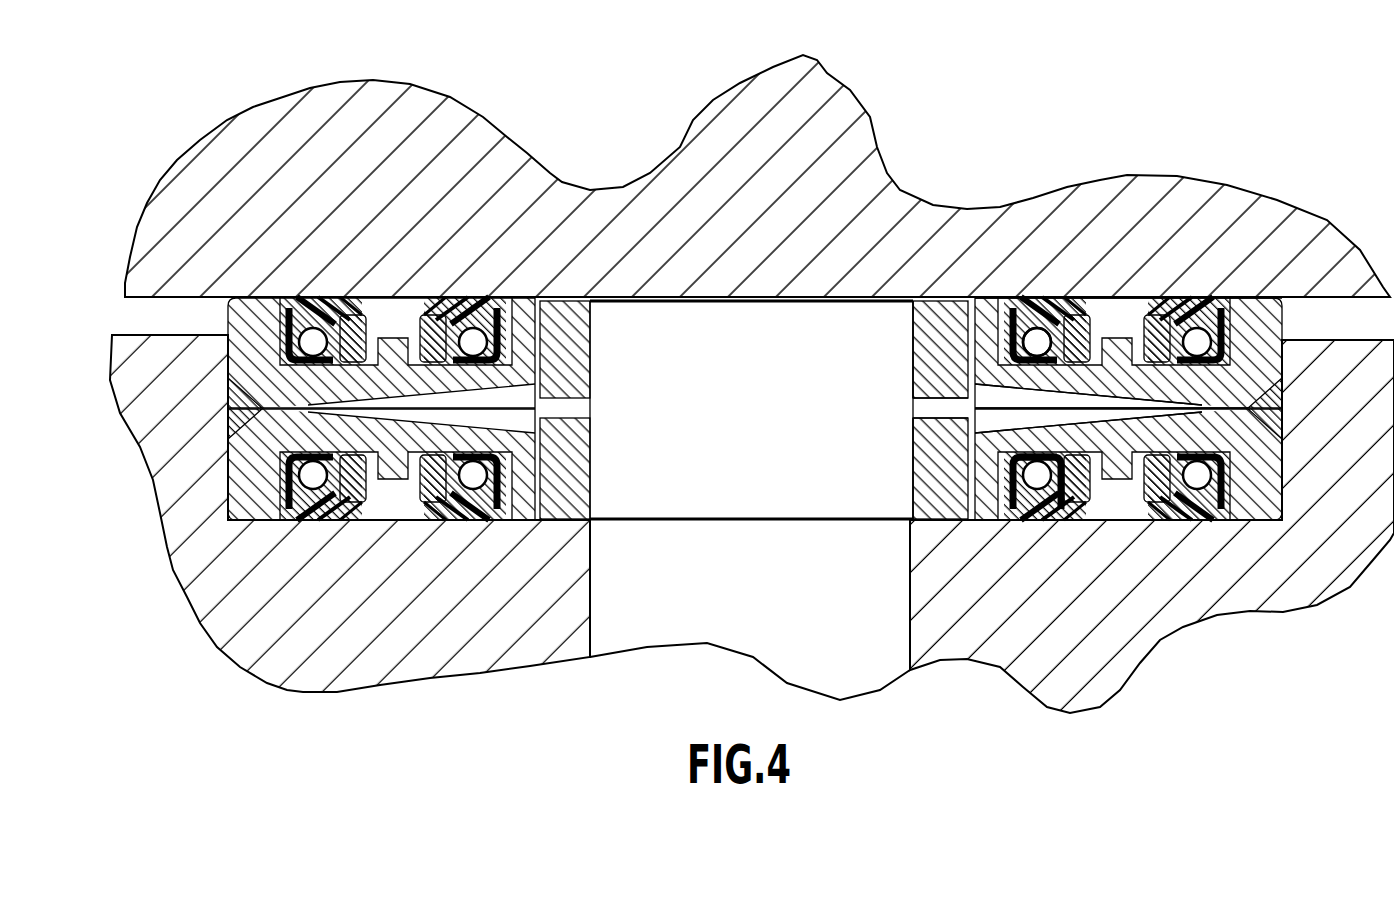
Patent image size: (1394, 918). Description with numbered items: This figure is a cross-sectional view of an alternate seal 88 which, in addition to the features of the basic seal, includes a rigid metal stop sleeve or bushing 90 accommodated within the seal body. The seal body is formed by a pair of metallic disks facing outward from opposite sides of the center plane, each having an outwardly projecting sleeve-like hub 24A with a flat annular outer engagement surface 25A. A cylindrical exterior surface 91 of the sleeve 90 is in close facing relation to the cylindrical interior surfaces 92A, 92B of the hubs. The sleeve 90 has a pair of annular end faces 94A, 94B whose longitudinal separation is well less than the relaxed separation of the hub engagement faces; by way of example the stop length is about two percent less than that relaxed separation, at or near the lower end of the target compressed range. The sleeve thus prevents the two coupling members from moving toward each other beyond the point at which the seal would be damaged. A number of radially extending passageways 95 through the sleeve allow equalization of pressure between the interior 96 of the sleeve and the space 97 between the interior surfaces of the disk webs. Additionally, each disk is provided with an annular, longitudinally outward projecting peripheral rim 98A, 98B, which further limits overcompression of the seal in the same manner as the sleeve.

The alternate seal 88 is at (252, 541).
The stop sleeve 90 is at (905, 425).
The annular end face 94A is at (938, 298).
The annular end face 94B is at (935, 520).
The cylindrical interior surface 92A is at (913, 380).
The cylindrical interior surface 92B is at (965, 465).
The radially extending passageway 95 is at (920, 409).
The interior of the sleeve 96 is at (768, 425).
The space between interior surfaces of the webs 97 is at (1100, 409).
The peripheral rim 98A is at (1258, 333).
The peripheral rim 98B is at (1262, 492).
The hub 24A is at (988, 318).
The flat annular outer surface 25A is at (990, 298).
The cylindrical exterior surface 91 is at (993, 503).